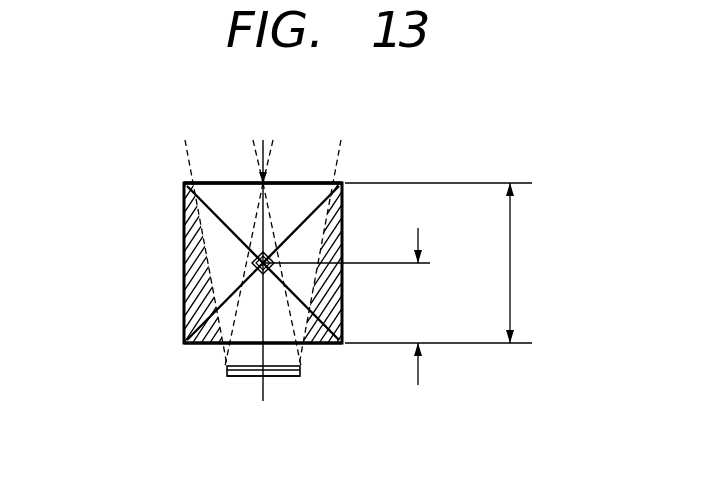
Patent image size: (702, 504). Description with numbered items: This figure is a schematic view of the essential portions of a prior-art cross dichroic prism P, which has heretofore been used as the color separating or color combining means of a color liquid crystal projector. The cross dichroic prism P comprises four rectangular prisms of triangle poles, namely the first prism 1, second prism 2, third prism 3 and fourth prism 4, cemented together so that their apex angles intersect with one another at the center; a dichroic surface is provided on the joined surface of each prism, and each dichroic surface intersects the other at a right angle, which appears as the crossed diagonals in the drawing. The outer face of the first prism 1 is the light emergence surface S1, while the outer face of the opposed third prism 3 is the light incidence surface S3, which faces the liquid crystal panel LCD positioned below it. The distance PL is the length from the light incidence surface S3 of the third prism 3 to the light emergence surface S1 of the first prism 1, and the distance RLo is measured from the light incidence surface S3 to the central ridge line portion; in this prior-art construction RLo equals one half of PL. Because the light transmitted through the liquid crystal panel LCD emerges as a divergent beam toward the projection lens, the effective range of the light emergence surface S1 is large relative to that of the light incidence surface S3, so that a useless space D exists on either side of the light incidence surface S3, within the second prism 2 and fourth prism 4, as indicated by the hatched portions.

The cross dichroic prism P is at (164, 189).
The first prism 1 is at (280, 188).
The light emergence surface S1 is at (313, 183).
The second prism 2 is at (322, 230).
The fourth prism 4 is at (217, 248).
The useless space D is at (190, 299).
The third prism 3 is at (205, 346).
The liquid crystal panel LCD is at (242, 376).
The light incidence surface S3 is at (290, 377).
The distance from light incidence surface to light emergence surface PL is at (442, 263).
The distance from light incidence surface to ridge line portion RLo is at (436, 306).